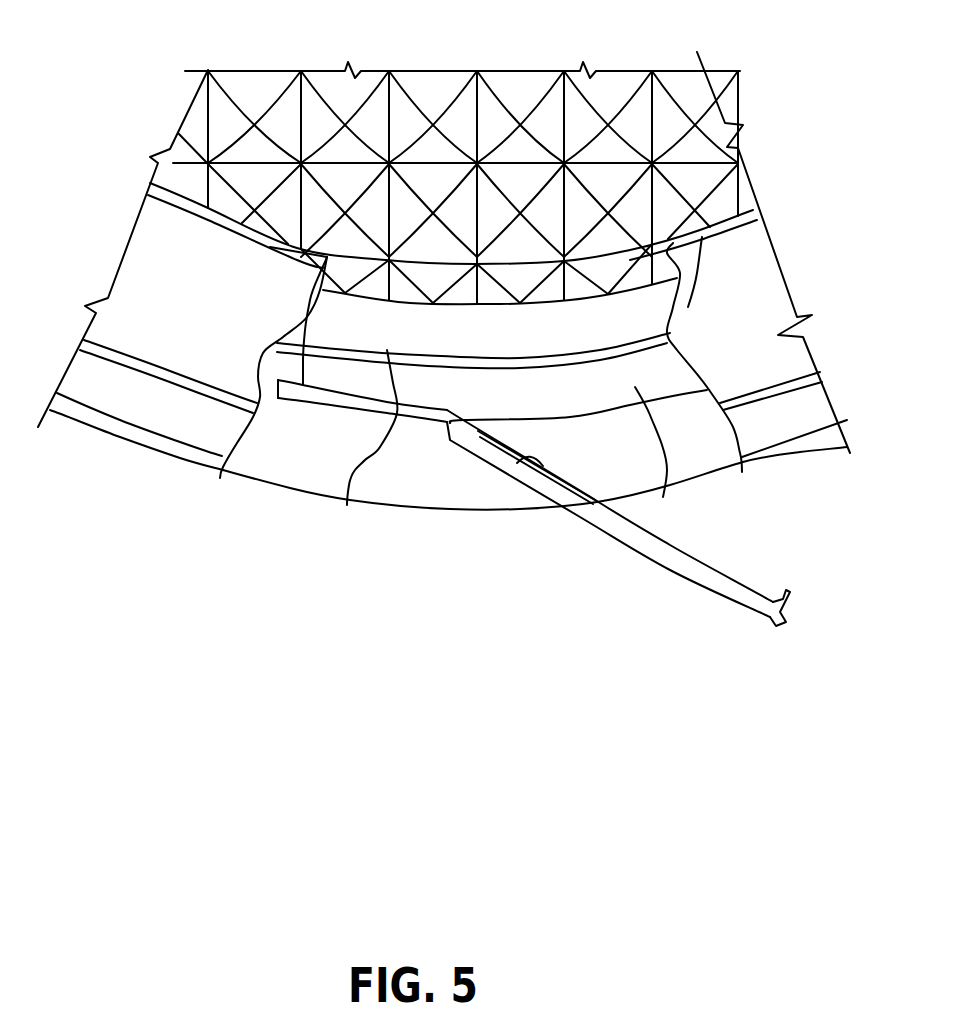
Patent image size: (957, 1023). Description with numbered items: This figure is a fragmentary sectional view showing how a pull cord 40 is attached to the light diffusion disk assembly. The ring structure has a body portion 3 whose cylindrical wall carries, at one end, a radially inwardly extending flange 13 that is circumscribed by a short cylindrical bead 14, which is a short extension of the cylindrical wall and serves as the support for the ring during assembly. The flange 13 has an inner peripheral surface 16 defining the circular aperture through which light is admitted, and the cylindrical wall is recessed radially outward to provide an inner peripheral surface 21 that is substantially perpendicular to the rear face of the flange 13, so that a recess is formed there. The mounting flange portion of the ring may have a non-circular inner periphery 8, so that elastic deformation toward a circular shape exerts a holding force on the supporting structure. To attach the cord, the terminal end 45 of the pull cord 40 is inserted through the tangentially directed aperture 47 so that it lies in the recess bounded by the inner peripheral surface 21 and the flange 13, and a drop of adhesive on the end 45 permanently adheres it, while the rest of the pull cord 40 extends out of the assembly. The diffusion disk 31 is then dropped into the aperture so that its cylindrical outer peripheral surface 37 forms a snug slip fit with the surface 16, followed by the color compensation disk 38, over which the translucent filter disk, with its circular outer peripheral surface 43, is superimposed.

The body portion 3 is at (122, 438).
The non-circular inner periphery 8 is at (332, 352).
The radially inwardly extending flange 13 is at (181, 336).
The cylindrical flange or bead 14 is at (222, 425).
The inner peripheral surface 16 is at (224, 213).
The inner peripheral surface 21 is at (535, 418).
The diffusion disk 31 is at (655, 123).
The cylindrical outer peripheral surface 37 is at (688, 307).
The color compensation disk 38 is at (663, 497).
The pull cord 40 is at (717, 575).
The circular outer peripheral surface 43 is at (347, 505).
The terminal end 45 is at (307, 317).
The tangentially directed aperture 47 is at (517, 460).